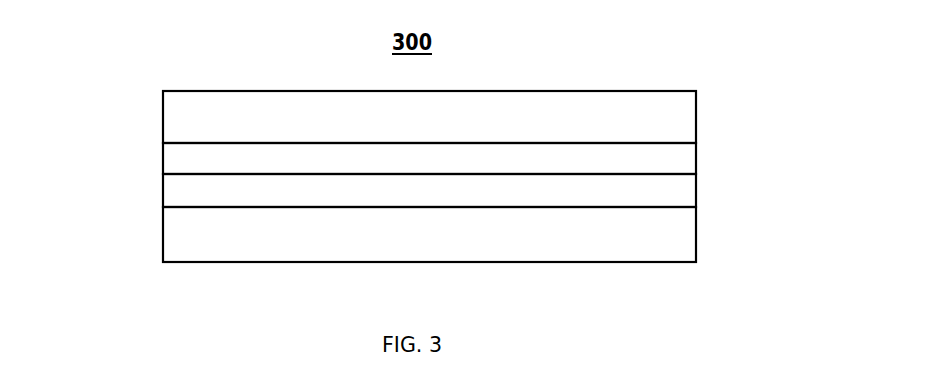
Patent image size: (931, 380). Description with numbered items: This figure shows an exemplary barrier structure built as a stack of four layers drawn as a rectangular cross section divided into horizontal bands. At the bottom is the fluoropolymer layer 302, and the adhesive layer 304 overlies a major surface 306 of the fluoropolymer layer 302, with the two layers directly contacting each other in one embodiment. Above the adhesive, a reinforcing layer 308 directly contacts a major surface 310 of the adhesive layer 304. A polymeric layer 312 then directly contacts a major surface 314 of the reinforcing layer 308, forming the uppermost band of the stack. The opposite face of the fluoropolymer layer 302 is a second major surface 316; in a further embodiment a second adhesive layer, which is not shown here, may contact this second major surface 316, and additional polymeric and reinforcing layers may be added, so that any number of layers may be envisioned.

The fluoropolymer layer 302 is at (378, 234).
The adhesive layer 304 is at (375, 190).
The major surface 306 is at (486, 188).
The reinforcing layer 308 is at (369, 158).
The major surface 310 is at (492, 156).
The polymeric layer 312 is at (374, 117).
The major surface 314 is at (497, 120).
The second major surface 316 is at (477, 247).